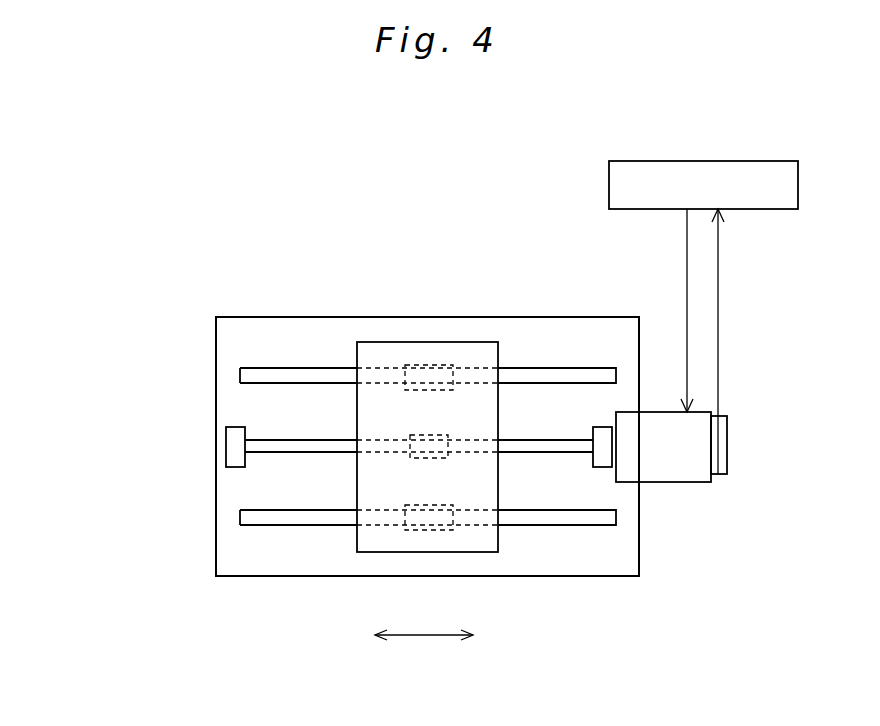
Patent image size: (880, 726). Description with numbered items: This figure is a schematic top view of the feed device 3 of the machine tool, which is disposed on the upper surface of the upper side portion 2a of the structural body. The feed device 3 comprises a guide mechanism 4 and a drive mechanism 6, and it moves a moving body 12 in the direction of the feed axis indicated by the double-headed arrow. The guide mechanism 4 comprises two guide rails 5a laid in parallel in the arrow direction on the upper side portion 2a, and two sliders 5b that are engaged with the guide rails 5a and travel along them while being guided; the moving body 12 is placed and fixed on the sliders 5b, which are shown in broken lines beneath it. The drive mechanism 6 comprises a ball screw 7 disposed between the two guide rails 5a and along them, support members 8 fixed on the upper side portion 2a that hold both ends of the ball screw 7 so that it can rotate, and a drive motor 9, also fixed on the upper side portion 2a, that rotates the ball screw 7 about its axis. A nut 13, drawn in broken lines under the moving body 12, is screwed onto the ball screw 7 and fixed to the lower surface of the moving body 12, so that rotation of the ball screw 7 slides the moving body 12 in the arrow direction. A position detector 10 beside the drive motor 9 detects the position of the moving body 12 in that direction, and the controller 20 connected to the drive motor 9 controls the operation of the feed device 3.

The upper side portion 2a is at (217, 330).
The feed device 3 is at (452, 256).
The guide mechanism 4 is at (425, 449).
The guide rails 5a is at (300, 370).
The sliders 5b is at (438, 365).
The drive mechanism 6 is at (430, 425).
The ball screw 7 is at (287, 442).
The support members 8 is at (230, 447).
The drive motor 9 is at (667, 482).
The position detector 10 is at (720, 476).
The moving body 12 is at (385, 343).
The nut 13 is at (432, 437).
The controller 20 is at (695, 161).